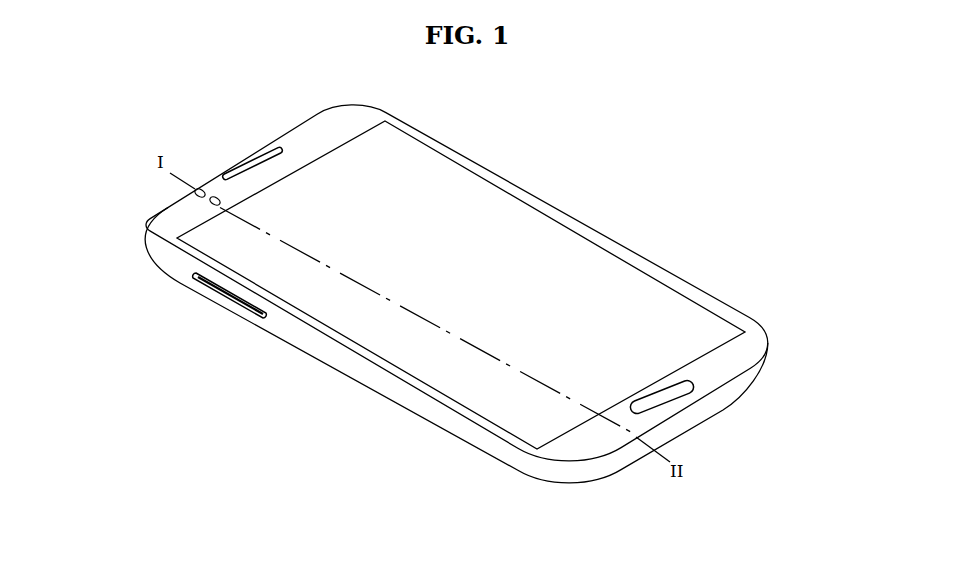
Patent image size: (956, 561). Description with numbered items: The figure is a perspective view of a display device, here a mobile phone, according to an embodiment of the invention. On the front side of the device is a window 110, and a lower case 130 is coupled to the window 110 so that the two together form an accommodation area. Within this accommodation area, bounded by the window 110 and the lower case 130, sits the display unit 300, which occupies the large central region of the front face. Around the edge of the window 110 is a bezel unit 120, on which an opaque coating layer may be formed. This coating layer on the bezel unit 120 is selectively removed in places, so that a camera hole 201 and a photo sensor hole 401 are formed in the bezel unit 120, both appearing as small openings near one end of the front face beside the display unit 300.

The window 110 is at (623, 238).
The bezel unit 120 is at (317, 128).
The lower case 130 is at (298, 336).
The camera hole 201 is at (194, 193).
The display unit 300 is at (554, 243).
The photo sensor hole 401 is at (210, 204).